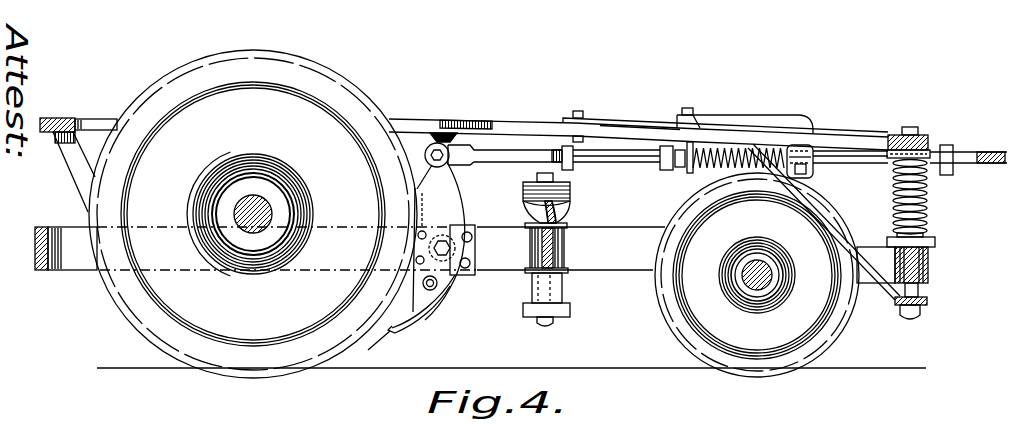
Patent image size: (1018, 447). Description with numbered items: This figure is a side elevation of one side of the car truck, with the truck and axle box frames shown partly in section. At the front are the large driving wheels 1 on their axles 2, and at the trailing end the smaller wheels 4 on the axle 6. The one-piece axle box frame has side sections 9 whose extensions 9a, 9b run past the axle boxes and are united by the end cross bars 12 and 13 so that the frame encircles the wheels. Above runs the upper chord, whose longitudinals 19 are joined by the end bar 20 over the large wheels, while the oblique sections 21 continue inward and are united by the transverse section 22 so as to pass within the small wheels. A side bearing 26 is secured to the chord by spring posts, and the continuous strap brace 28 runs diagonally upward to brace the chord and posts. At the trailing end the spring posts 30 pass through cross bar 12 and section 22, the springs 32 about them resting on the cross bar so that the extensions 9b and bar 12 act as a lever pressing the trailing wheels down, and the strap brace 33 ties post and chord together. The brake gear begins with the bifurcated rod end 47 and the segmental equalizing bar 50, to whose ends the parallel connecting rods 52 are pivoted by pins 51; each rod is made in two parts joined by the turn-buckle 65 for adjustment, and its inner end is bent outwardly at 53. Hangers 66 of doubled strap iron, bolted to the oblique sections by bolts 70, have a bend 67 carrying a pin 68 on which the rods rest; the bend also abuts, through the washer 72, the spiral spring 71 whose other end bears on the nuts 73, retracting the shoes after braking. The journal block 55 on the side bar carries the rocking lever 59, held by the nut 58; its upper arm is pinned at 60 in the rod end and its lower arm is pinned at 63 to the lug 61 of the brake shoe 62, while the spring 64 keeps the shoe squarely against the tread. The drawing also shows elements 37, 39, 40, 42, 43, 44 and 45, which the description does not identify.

The driving wheels 1 is at (233, 308).
The axles 2 is at (268, 203).
The trailing wheels 4 is at (757, 275).
The axle 6 is at (745, 292).
The axle box frame side sections 9 is at (571, 248).
The side bar extension 9a is at (83, 270).
The side bar extension 9b is at (876, 265).
The transverse end bar 12 is at (929, 268).
The end section 13 is at (33, 256).
The longitudinals 19 is at (440, 121).
The end bar 20 is at (106, 118).
The oblique sections 21 is at (603, 125).
The transverse section 22 is at (928, 141).
The side bearing 26 is at (646, 119).
The strap brace 28 is at (73, 181).
The spring posts 30 is at (893, 196).
The springs 32 is at (929, 200).
The brace 33 is at (722, 166).
The spring rod 37 is at (560, 245).
The cap 39 is at (566, 190).
The spring 40 is at (566, 258).
The cone 42 is at (562, 214).
The base plate 43 is at (558, 317).
The cylinder 44 is at (532, 288).
The cup 45 is at (528, 208).
The bifurcation 47 is at (568, 273).
The equalizing bar 50 is at (991, 168).
The pin 51 is at (955, 153).
The connecting rods 52 is at (540, 155).
The outwardly bent ends 53 is at (497, 149).
The journal block 55 is at (477, 242).
The nut 58 is at (445, 238).
The rocking lever 59 is at (452, 192).
The pin 60 is at (426, 162).
The lug 61 is at (423, 312).
The brake shoe 62 is at (380, 346).
The pin 63 is at (437, 287).
The spring 64 is at (432, 306).
The turn-buckle 65 is at (658, 163).
The hangers 66 is at (718, 116).
The bend 67 is at (803, 158).
The pin 68 is at (812, 176).
The bolts 70 is at (579, 111).
The spiral springs 71 is at (735, 170).
The washer 72 is at (797, 154).
The nuts 73 is at (686, 172).